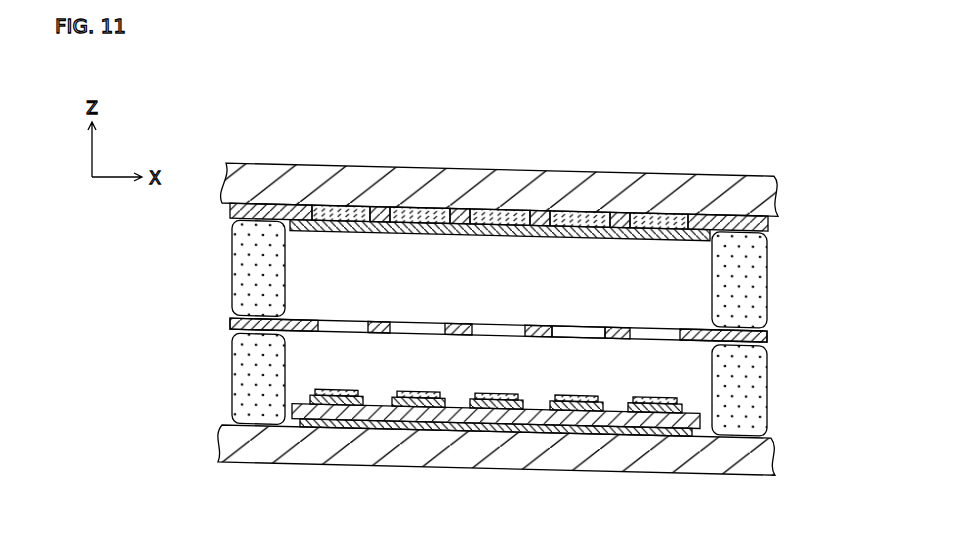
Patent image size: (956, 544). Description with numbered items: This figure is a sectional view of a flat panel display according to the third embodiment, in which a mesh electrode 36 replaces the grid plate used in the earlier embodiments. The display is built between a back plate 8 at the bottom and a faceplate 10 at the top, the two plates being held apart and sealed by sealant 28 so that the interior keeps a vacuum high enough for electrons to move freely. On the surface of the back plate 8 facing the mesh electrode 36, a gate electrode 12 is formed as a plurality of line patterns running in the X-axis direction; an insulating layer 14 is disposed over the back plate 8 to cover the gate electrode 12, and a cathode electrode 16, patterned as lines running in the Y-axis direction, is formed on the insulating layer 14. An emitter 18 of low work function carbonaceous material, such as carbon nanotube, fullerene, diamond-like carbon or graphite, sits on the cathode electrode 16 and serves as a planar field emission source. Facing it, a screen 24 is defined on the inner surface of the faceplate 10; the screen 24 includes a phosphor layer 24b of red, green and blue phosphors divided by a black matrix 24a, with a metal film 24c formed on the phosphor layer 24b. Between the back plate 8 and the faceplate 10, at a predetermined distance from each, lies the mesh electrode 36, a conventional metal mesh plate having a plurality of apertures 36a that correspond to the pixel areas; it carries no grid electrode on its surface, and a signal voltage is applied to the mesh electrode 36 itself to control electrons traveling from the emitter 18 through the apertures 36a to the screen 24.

The back plate 8 is at (496, 473).
The faceplate 10 is at (499, 159).
The gate electrode 12 is at (496, 454).
The insulating layer 14 is at (496, 460).
The cathode electrode 16 is at (412, 448).
The emitter 18 is at (576, 450).
The screen 24 is at (465, 150).
The black matrix 24a is at (476, 184).
The phosphor layer 24b is at (580, 186).
The metal film 24c is at (500, 193).
The sealant 28 is at (440, 328).
The mesh electrode 36 is at (498, 306).
The apertures 36a is at (581, 304).